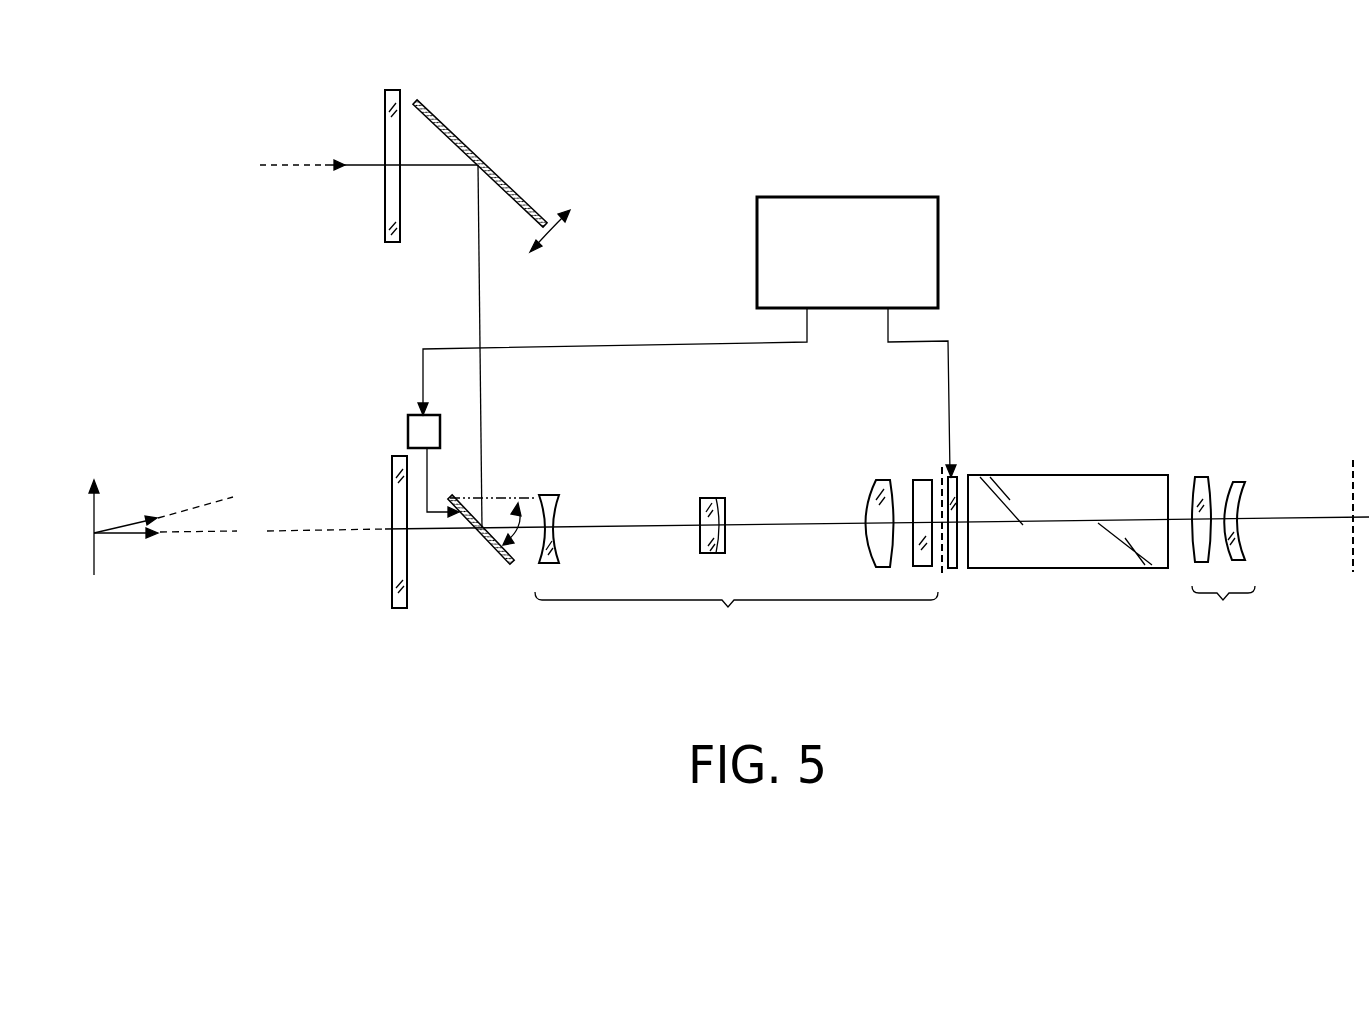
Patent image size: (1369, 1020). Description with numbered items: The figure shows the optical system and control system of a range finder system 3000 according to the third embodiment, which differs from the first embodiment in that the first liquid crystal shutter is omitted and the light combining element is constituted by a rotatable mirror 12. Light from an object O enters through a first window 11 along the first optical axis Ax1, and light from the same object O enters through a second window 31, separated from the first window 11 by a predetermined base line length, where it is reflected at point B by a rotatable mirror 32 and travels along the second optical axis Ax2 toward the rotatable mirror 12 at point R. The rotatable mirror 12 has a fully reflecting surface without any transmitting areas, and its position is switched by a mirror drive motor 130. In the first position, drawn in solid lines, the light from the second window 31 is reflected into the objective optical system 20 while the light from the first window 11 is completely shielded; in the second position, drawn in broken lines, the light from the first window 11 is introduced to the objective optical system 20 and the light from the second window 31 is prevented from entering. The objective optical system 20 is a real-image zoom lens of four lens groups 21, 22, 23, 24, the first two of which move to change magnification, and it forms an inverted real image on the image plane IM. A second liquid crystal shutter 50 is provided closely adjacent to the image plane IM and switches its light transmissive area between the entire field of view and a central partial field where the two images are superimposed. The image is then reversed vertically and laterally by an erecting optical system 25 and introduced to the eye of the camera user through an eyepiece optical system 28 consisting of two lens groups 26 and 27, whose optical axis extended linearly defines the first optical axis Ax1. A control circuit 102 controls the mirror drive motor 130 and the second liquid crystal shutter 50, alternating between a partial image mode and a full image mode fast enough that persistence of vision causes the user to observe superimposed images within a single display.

The second window 31 is at (393, 92).
The rotatable mirror 32 is at (453, 135).
The beam reflection point B is at (472, 167).
The second optical axis Ax2 is at (478, 297).
The range finder system 3000 is at (1015, 150).
The control circuit 102 is at (940, 260).
The mirror drive motor 130 is at (407, 422).
The object O is at (93, 553).
The first optical axis Ax1 is at (792, 522).
The first window 11 is at (393, 580).
The rotatable mirror 12 is at (485, 562).
The reflection point R is at (448, 497).
The lens group 21 is at (548, 495).
The lens group 22 is at (707, 498).
The lens group 23 is at (873, 485).
The lens group 24 is at (922, 480).
The image plane IM is at (945, 576).
The second liquid crystal shutter 50 is at (958, 487).
The erecting optical system 25 is at (1090, 475).
The lens group 26 is at (1198, 477).
The lens group 27 is at (1237, 482).
The eyepiece optical system 28 is at (1223, 611).
The objective optical system 20 is at (736, 616).